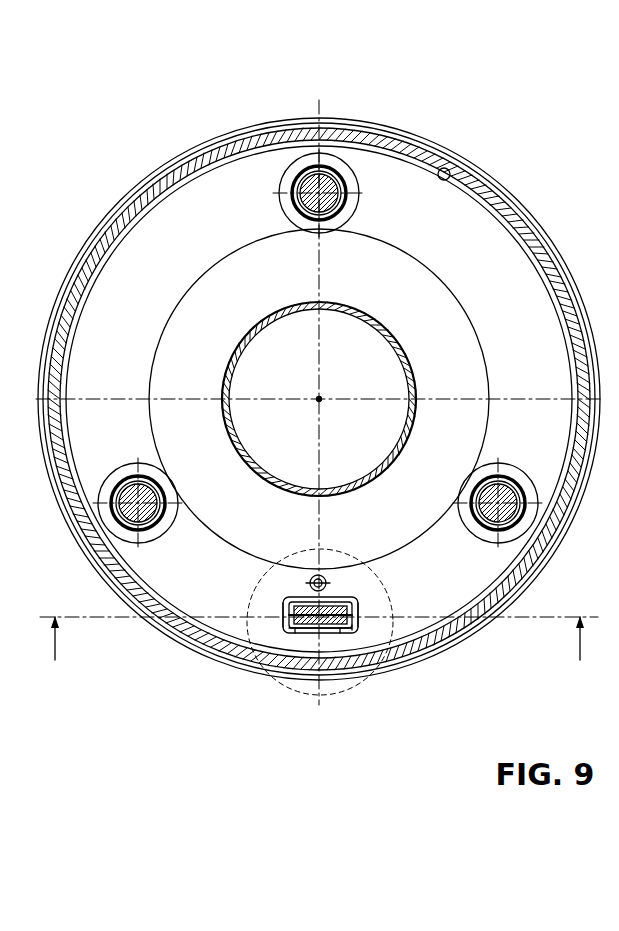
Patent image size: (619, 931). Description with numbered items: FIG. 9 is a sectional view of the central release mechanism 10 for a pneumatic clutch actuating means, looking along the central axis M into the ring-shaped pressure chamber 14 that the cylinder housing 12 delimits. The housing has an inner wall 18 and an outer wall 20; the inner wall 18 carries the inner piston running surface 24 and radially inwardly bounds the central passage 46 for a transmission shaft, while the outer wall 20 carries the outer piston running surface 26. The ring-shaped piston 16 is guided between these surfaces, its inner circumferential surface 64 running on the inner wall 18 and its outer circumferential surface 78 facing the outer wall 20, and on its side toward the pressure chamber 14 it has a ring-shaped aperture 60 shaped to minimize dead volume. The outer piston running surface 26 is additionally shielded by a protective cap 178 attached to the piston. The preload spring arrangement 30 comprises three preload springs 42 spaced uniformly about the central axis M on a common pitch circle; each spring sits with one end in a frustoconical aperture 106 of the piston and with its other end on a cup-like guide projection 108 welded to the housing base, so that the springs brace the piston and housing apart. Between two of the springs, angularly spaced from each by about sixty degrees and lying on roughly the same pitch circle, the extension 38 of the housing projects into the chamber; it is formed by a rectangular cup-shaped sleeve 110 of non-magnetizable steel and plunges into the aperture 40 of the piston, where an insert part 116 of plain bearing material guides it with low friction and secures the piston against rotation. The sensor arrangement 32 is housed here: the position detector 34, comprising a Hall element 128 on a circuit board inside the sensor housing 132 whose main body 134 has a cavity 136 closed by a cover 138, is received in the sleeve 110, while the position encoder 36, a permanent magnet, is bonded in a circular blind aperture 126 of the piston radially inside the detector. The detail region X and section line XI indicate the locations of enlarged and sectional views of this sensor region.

The central release mechanism 10 is at (535, 147).
The cylinder housing 12 is at (400, 142).
The pressure chamber 14 is at (513, 250).
The ring-shaped piston 16 is at (514, 358).
The inner wall 18 is at (292, 318).
The outer wall 20 is at (215, 659).
The inner piston running surface 24 is at (333, 305).
The outer piston running surface 26 is at (447, 170).
The preload spring arrangement 30 is at (527, 487).
The sensor arrangement 32 is at (345, 578).
The position detector 34 is at (283, 605).
The position encoder 36 is at (316, 575).
The extension 38 is at (362, 614).
The aperture 40 is at (305, 635).
The preload springs 42 is at (327, 177).
The central passage 46 is at (274, 455).
The ring-shaped aperture 60 is at (262, 283).
The inner circumferential surface 64 is at (232, 355).
The outer circumferential surface 78 is at (287, 122).
The frustoconical apertures 106 is at (338, 195).
The guide projections 108 is at (325, 197).
The cup-shaped sleeve 110 is at (340, 635).
The insert part 116 is at (283, 623).
The aperture 126 is at (323, 580).
The Hall element 128 is at (312, 582).
The sensor housing 132 is at (360, 601).
The main body 134 is at (355, 630).
The cavity 136 is at (300, 605).
The cover 138 is at (350, 603).
The protective cap 178 is at (120, 193).
The central axis M is at (319, 399).
The detail X is at (392, 632).
The section line XI- XI is at (319, 617).